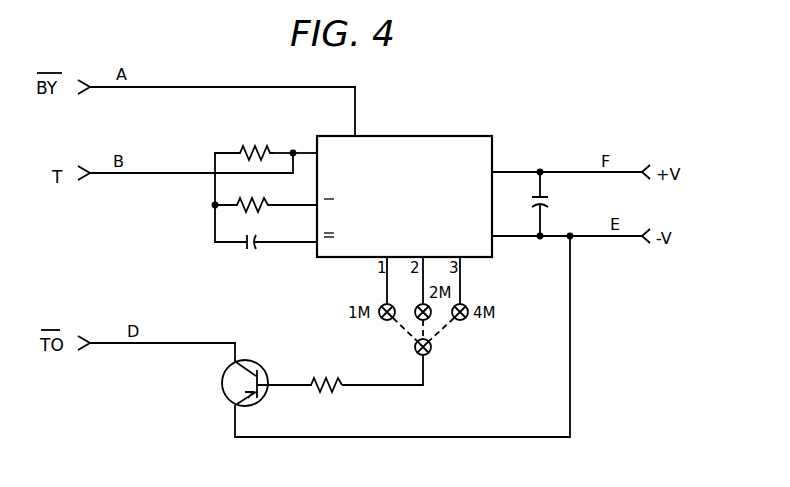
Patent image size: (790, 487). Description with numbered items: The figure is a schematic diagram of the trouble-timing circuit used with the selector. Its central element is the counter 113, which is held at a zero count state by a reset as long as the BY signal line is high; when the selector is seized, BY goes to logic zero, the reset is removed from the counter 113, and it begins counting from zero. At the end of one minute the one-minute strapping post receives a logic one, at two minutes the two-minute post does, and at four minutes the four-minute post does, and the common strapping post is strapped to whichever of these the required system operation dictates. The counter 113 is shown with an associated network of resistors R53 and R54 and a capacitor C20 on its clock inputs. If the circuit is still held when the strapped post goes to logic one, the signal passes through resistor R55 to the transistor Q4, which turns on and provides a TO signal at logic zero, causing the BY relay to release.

The counter 113 is at (442, 136).
The resistor R53 is at (254, 140).
The resistor R54 is at (232, 198).
The resistor R55 is at (325, 375).
The capacitor C20 is at (278, 258).
The transistor Q4 is at (262, 364).